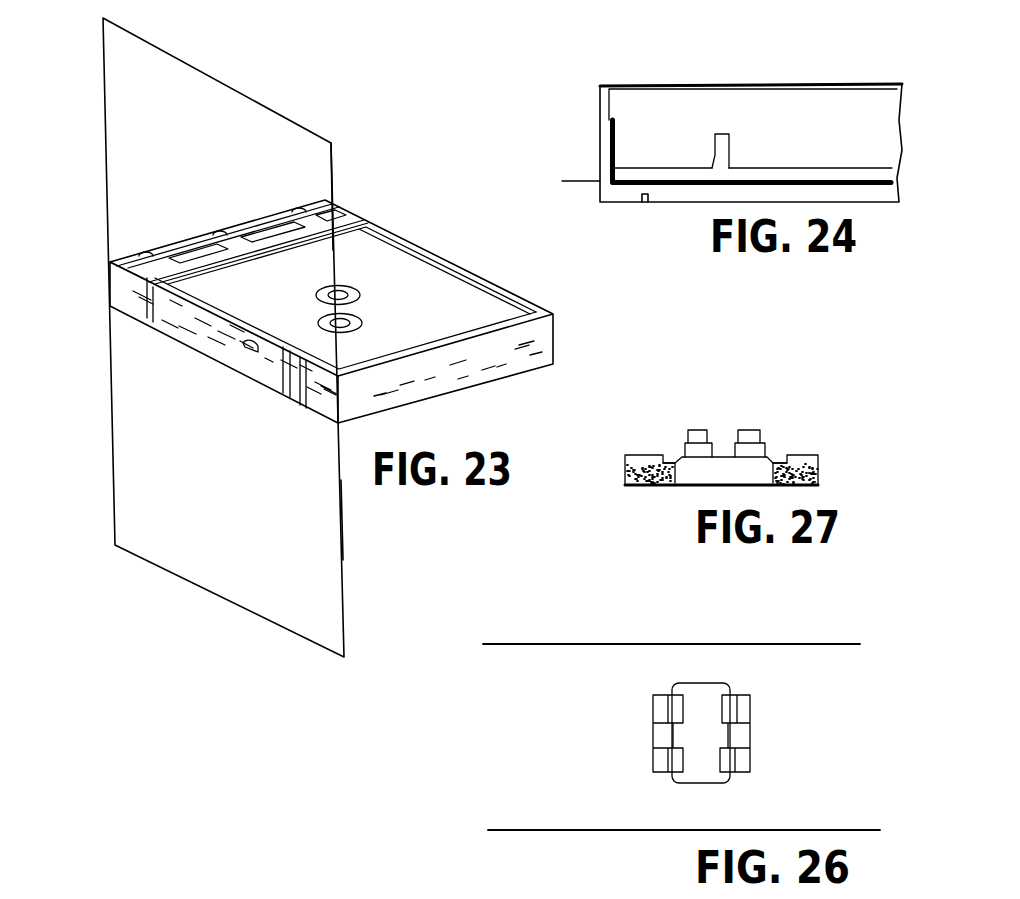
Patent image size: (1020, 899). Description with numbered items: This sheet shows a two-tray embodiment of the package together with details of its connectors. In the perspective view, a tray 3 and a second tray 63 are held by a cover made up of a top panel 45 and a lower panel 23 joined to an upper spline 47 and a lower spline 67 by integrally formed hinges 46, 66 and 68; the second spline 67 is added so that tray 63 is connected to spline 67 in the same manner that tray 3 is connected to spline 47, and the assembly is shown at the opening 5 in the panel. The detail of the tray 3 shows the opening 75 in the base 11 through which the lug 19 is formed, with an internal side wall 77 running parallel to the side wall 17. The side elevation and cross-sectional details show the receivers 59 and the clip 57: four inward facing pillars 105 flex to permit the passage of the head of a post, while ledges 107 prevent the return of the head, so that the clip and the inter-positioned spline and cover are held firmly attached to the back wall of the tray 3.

In FIG. 23, the tray 3 is at (342, 322).
In FIG. 23, the panel opening 5 is at (345, 518).
In FIG. 24, the base 11 is at (853, 168).
In FIG. 24, the side wall 17 is at (600, 140).
In FIG. 24, the lug 19 is at (652, 200).
In FIG. 23, the lower panel 23 is at (345, 604).
In FIG. 23, the top panel 45 is at (333, 180).
In FIG. 23, the hinge 46 is at (225, 330).
In FIG. 23, the upper spline 47 is at (103, 278).
In FIG. 27, the clip 57 is at (820, 478).
In FIG. 26, the clip 57 is at (675, 831).
In FIG. 27, the receiver 59 is at (738, 432).
In FIG. 26, the receiver 59 is at (709, 697).
In FIG. 23, the tray 63 is at (475, 388).
In FIG. 23, the hinge 66 is at (245, 340).
In FIG. 23, the lower spline 67 is at (310, 404).
In FIG. 23, the hinge 68 is at (278, 375).
In FIG. 24, the opening 75 is at (675, 178).
In FIG. 24, the internal side wall 77 is at (730, 150).
In FIG. 27, the inward facing pillar 105 is at (760, 436).
In FIG. 26, the inward facing pillar 105 is at (748, 697).
In FIG. 27, the ledge 107 is at (698, 434).
In FIG. 26, the ledge 107 is at (673, 695).